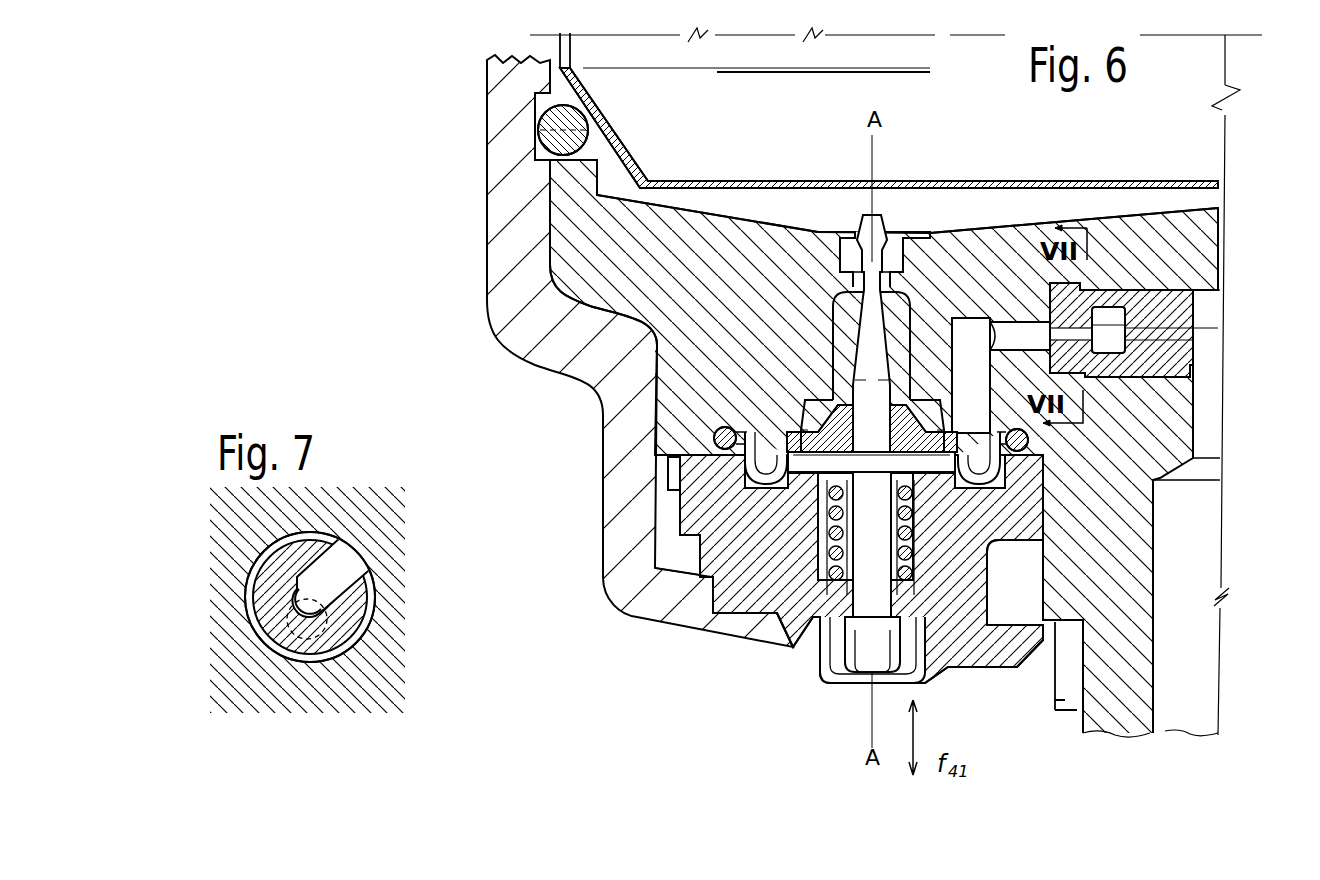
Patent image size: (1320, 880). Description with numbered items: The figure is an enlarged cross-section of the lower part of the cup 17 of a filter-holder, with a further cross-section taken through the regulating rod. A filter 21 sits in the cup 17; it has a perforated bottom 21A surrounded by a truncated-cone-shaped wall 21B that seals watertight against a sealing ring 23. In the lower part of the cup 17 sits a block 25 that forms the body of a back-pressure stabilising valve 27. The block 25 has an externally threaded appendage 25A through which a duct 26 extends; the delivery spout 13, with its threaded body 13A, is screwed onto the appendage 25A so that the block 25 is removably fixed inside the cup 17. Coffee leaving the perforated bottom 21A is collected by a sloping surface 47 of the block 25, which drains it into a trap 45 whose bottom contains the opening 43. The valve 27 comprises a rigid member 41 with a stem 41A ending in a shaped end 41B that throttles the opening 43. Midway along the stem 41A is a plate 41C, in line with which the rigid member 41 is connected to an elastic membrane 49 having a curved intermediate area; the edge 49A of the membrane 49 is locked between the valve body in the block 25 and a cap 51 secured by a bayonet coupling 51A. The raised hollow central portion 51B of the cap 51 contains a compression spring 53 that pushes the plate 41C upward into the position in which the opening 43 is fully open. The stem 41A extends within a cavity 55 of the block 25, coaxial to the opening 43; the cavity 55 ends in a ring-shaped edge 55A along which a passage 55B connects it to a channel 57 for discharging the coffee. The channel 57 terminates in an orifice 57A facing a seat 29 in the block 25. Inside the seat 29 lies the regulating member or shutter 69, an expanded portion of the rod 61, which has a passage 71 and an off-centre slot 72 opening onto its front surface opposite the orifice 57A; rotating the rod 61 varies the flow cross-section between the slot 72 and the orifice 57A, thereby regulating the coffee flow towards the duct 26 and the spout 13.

In FIG. 6, the delivery spout 13 is at (1140, 290).
In FIG. 7, the delivery spout 13 is at (368, 627).
In FIG. 6, the threaded body 13A is at (1055, 693).
In FIG. 6, the cup 17 is at (487, 250).
In FIG. 6, the filter 21 is at (1187, 127).
In FIG. 6, the perforated bottom 21A is at (736, 190).
In FIG. 6, the truncated-cone-shaped wall 21B is at (622, 160).
In FIG. 6, the sealing ring 23 is at (583, 112).
In FIG. 6, the block 25 is at (575, 272).
In FIG. 7, the block 25 is at (353, 513).
In FIG. 6, the externally threaded appendage 25A is at (1125, 725).
In FIG. 6, the duct 26 is at (1218, 530).
In FIG. 6, the back-pressure stabilising valve 27 is at (720, 628).
In FIG. 6, the seat 29 is at (1213, 290).
In FIG. 6, the rigid member 41 is at (858, 657).
In FIG. 6, the stem 41A is at (880, 590).
In FIG. 6, the shaped end 41B is at (885, 222).
In FIG. 6, the plate 41C is at (820, 407).
In FIG. 6, the opening 43 is at (910, 275).
In FIG. 6, the trap 45 is at (846, 238).
In FIG. 6, the sloping surface 47 is at (1000, 228).
In FIG. 6, the elastic membrane 49 is at (813, 433).
In FIG. 6, the edge of the membrane 49A is at (722, 428).
In FIG. 6, the cap 51 is at (1010, 510).
In FIG. 6, the bayonet coupling 51A is at (668, 470).
In FIG. 6, the raised hollow central portion 51B is at (807, 600).
In FIG. 6, the compression spring 53 is at (778, 580).
In FIG. 6, the cavity 55 is at (893, 333).
In FIG. 6, the ring-shaped edge 55A is at (750, 432).
In FIG. 6, the passage 55B is at (964, 427).
In FIG. 6, the channel 57 is at (1000, 340).
In FIG. 7, the channel 57 is at (275, 627).
In FIG. 6, the orifice 57A is at (988, 355).
In FIG. 6, the rod 61 is at (1220, 325).
In FIG. 7, the rod 61 is at (310, 643).
In FIG. 6, the regulating member or shutter 69 is at (1080, 290).
In FIG. 6, the passage 71 is at (1130, 365).
In FIG. 6, the slot 72 is at (1100, 355).
In FIG. 7, the slot 72 is at (357, 550).